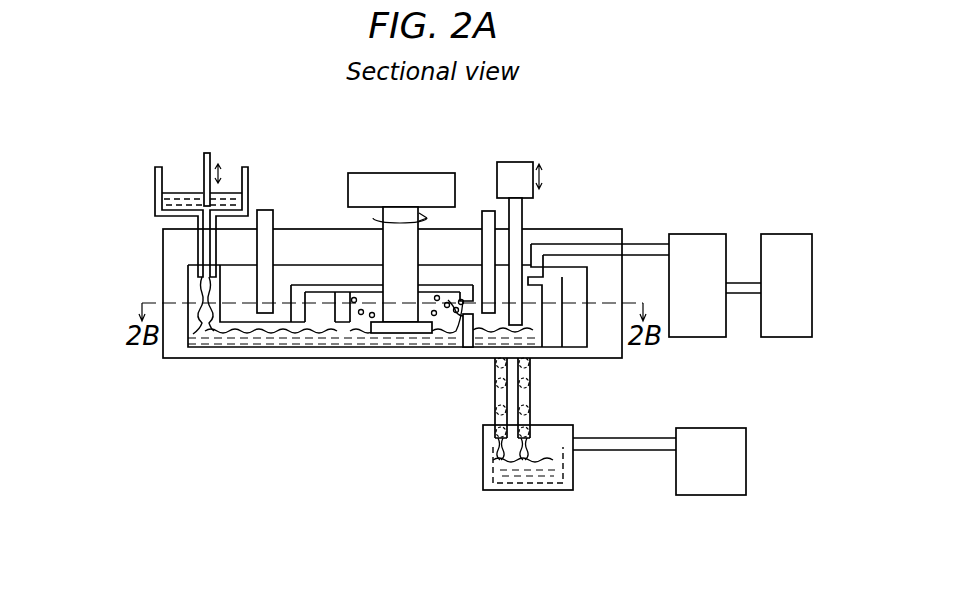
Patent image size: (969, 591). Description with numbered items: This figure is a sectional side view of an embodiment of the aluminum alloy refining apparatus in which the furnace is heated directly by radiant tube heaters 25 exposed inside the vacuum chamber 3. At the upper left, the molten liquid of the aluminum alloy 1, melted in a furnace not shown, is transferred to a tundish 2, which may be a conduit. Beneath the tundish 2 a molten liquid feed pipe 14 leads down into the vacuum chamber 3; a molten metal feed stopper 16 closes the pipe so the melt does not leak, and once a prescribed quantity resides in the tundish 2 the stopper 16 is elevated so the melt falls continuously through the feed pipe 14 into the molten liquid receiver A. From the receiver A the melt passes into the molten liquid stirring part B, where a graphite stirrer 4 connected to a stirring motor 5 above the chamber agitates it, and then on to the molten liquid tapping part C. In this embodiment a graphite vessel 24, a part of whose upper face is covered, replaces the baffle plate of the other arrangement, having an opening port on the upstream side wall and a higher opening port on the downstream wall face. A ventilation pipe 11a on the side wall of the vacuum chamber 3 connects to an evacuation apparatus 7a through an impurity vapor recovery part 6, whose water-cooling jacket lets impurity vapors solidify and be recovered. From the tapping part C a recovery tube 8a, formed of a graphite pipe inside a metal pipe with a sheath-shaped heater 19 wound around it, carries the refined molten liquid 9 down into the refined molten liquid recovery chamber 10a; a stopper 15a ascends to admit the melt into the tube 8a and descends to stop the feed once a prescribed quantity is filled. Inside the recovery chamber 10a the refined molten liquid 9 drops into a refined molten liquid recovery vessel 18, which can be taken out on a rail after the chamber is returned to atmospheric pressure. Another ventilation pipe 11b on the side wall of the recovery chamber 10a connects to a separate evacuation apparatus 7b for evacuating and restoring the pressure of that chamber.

The molten liquid of the aluminum alloy 1 is at (162, 198).
The tundish 2 is at (248, 184).
The vacuum chamber 3 is at (283, 350).
The stirrer 4 is at (387, 328).
The stirring motor 5 is at (374, 182).
The impurity vapor recovery part 6 is at (701, 233).
The evacuation apparatus 7a is at (782, 233).
The evacuation apparatus 7b is at (706, 428).
The recovery tube 8a is at (531, 383).
The refined molten liquid 9 is at (475, 323).
The refined molten liquid recovery chamber 10a is at (520, 492).
The ventilation pipe 11a is at (635, 244).
The ventilation pipe 11b is at (603, 438).
The molten liquid feed pipe 14 is at (200, 237).
The stopper 15a is at (520, 220).
The molten metal feed stopper 16 is at (211, 156).
The refined molten liquid recovery vessel 18 is at (563, 473).
The sheath-shaped heater 19 is at (531, 410).
The graphite vessel 24 is at (461, 320).
The radiant tube heater 25 is at (267, 213).
The molten liquid receiver A is at (195, 320).
The molten liquid stirring part B is at (423, 323).
The molten liquid tapping part C is at (487, 345).